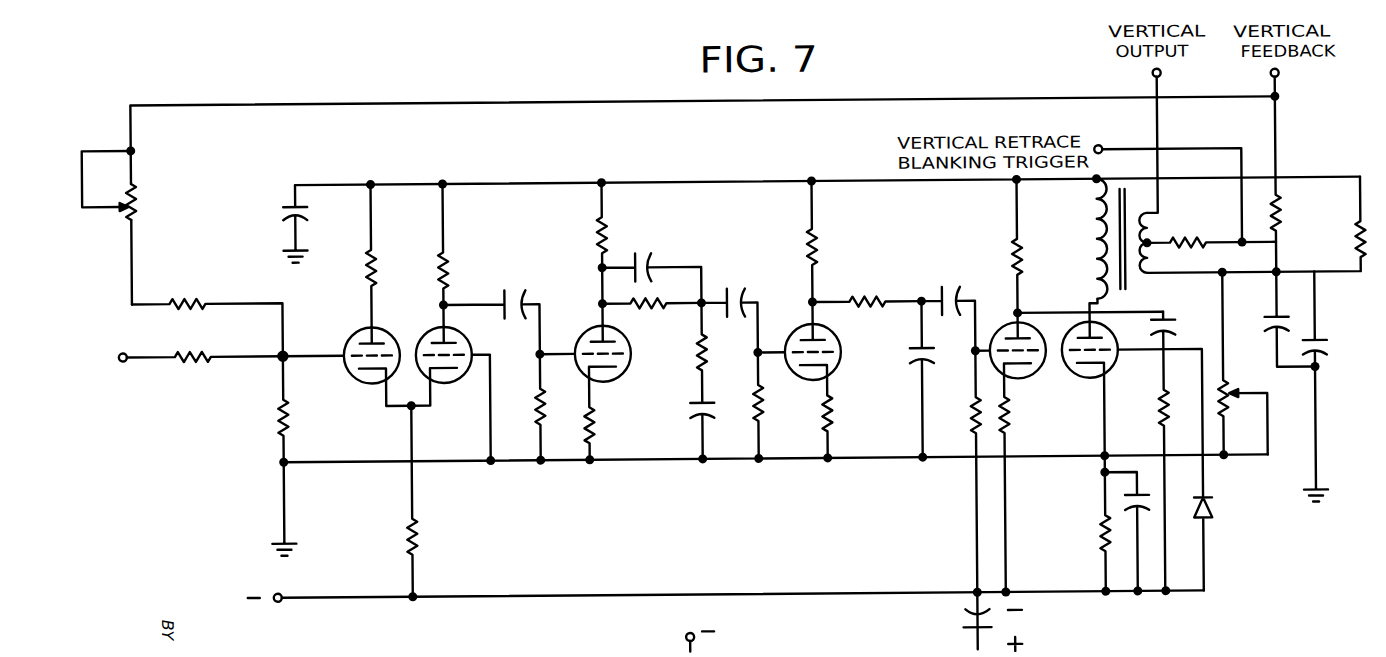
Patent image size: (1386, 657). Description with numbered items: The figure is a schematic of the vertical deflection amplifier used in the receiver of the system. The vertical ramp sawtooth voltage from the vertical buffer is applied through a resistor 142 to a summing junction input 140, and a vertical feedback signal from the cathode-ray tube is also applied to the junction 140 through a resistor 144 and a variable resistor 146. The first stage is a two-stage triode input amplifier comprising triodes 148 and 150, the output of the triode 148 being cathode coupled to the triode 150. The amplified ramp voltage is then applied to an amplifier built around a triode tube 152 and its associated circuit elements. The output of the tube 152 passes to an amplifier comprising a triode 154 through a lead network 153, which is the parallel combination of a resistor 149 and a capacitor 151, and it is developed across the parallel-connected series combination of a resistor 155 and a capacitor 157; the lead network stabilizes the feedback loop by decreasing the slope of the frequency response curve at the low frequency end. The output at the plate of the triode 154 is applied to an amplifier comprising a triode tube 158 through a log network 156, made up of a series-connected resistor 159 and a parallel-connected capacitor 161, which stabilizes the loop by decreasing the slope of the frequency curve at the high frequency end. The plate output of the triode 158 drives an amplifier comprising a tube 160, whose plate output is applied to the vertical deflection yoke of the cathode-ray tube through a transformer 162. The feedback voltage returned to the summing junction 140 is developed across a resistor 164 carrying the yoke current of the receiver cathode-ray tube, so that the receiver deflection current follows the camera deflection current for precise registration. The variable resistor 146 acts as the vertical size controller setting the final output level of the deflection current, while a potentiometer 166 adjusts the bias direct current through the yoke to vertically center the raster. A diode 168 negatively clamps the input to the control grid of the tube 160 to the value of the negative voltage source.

The summing junction input 140 is at (282, 357).
The resistor 142 is at (184, 368).
The resistor 144 is at (207, 284).
The variable resistor 146 is at (135, 205).
The triode 148 is at (390, 331).
The resistor 149 is at (638, 317).
The triode 150 is at (442, 395).
The capacitor 151 is at (639, 253).
The triode tube 152 is at (605, 390).
The lead network 153 is at (652, 274).
The triode 154 is at (837, 335).
The resistor 155 is at (704, 372).
The log network 156 is at (840, 319).
The capacitor 157 is at (714, 413).
The triode tube 158 is at (1000, 330).
The resistor 159 is at (874, 289).
The tube 160 is at (1075, 385).
The capacitor 161 is at (934, 366).
The transformer 162 is at (1165, 310).
The resistor 164 is at (1284, 222).
The potentiometer 166 is at (1227, 402).
The diode 168 is at (1213, 512).